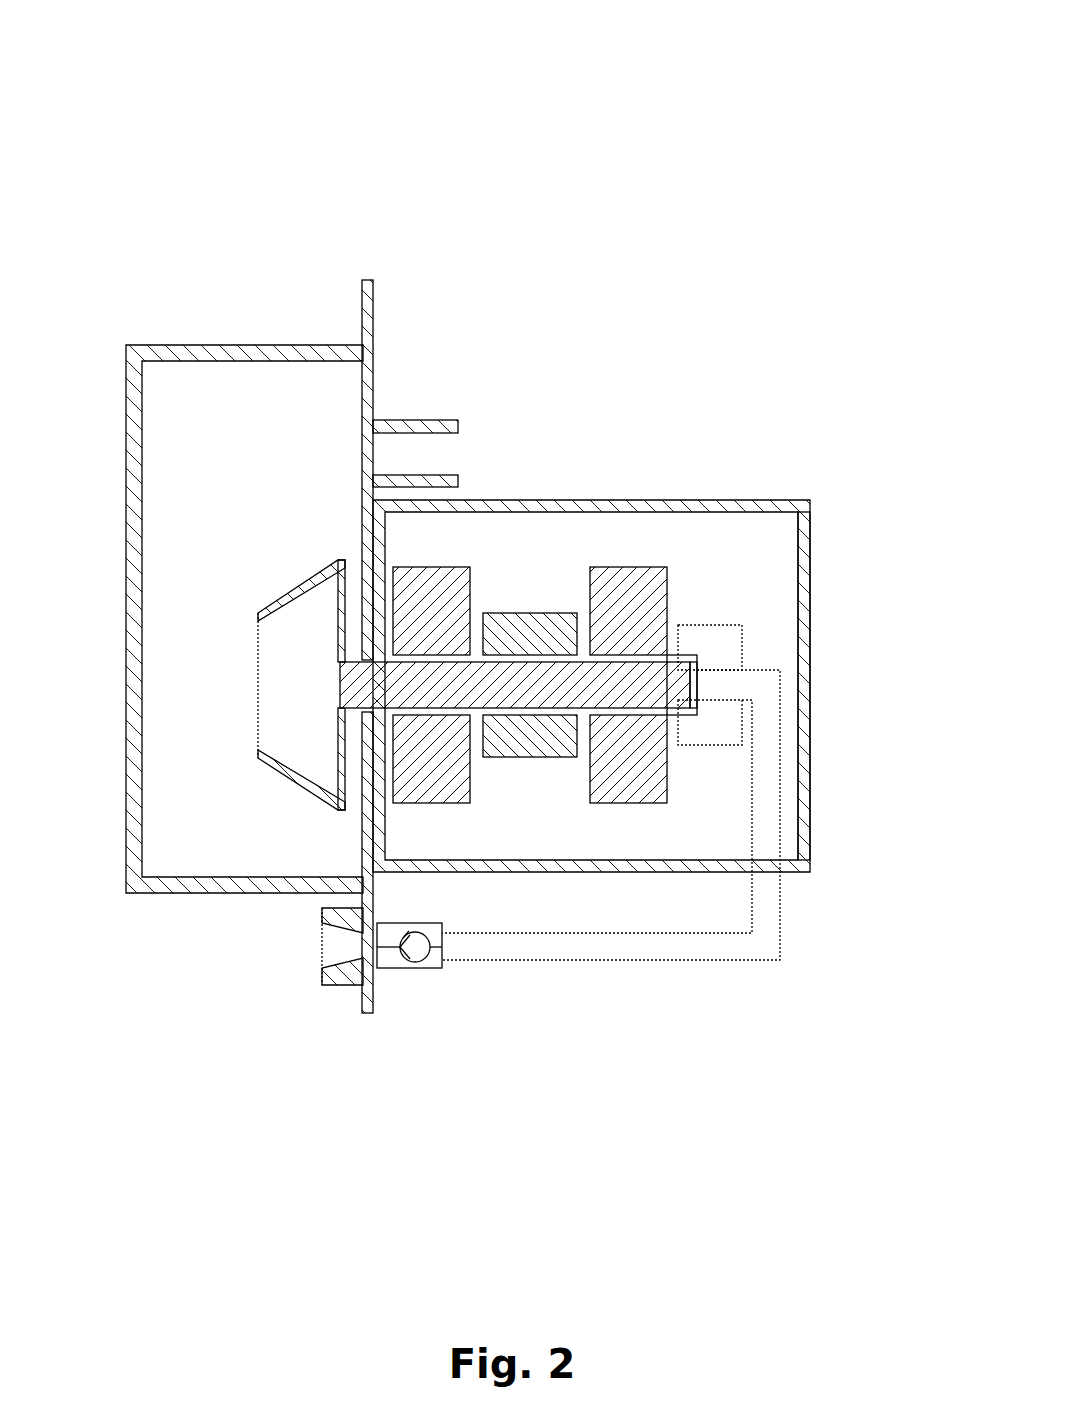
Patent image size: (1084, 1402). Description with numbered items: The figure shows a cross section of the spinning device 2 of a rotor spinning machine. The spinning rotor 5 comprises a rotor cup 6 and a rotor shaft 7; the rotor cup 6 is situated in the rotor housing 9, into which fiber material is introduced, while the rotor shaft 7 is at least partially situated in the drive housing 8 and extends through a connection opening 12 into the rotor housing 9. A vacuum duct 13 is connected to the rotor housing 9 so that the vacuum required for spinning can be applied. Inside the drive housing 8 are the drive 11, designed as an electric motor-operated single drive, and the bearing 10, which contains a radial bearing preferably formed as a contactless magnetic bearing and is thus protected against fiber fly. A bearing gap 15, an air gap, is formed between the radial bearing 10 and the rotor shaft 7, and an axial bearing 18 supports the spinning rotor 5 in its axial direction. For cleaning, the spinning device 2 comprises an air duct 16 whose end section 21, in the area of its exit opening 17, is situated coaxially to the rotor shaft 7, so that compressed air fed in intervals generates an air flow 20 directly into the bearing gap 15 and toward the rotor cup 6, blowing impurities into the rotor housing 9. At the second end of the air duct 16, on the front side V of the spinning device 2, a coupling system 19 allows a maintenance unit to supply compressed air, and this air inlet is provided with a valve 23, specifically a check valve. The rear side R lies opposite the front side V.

The spinning device 2 is at (322, 160).
The spinning rotor 5 is at (518, 894).
The rotor cup 6 is at (279, 788).
The rotor shaft 7 is at (515, 537).
The drive housing 8 is at (591, 603).
The rotor housing 9 is at (244, 690).
The bearing 10 is at (544, 719).
The drive 11 is at (547, 559).
The connection opening 12 is at (355, 655).
The vacuum duct 13 is at (415, 375).
The bearing gap 15 is at (696, 531).
The air duct 16 is at (618, 873).
The exit opening 17 is at (765, 542).
The axial bearing 18 is at (786, 769).
The coupling system 19 is at (330, 952).
The air flow 20 is at (708, 687).
The end section 21 is at (782, 597).
The valve 23 is at (411, 1025).
The rear side R is at (856, 734).
The front side V is at (362, 997).